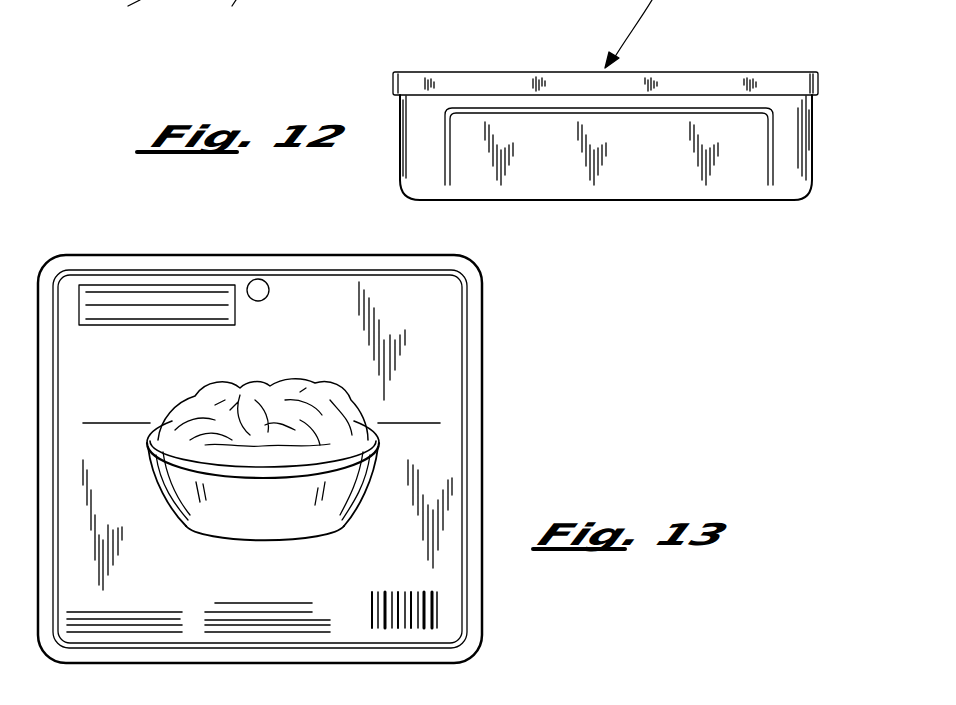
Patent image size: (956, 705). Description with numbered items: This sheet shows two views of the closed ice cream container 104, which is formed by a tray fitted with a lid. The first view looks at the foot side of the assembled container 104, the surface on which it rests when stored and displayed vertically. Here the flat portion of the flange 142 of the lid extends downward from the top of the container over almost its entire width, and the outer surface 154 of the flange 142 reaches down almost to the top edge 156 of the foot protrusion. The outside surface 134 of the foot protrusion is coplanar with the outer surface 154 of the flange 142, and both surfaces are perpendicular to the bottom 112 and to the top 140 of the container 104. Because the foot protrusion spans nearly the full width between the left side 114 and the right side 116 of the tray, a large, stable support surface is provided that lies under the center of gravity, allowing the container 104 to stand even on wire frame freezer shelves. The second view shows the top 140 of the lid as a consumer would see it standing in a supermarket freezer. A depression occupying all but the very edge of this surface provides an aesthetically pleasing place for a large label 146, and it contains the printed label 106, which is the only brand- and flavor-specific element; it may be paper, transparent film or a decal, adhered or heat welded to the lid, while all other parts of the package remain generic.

In FIG. 13, the container 104 is at (210, 252).
In FIG. 13, the printed label 106 is at (232, 364).
In FIG. 12, the bottom 112 is at (667, 203).
In FIG. 12, the left side 114 is at (398, 153).
In FIG. 12, the right side 116 is at (815, 154).
In FIG. 12, the outside surface of the foot protrusion 134 is at (140, 0).
In FIG. 12, the top 140 is at (700, 73).
In FIG. 12, the flange 142 is at (818, 88).
In FIG. 13, the label 146 is at (332, 357).
In FIG. 12, the outside surface of the flange 154 is at (517, 36).
In FIG. 12, the top edge of the foot protrusion 156 is at (666, 113).